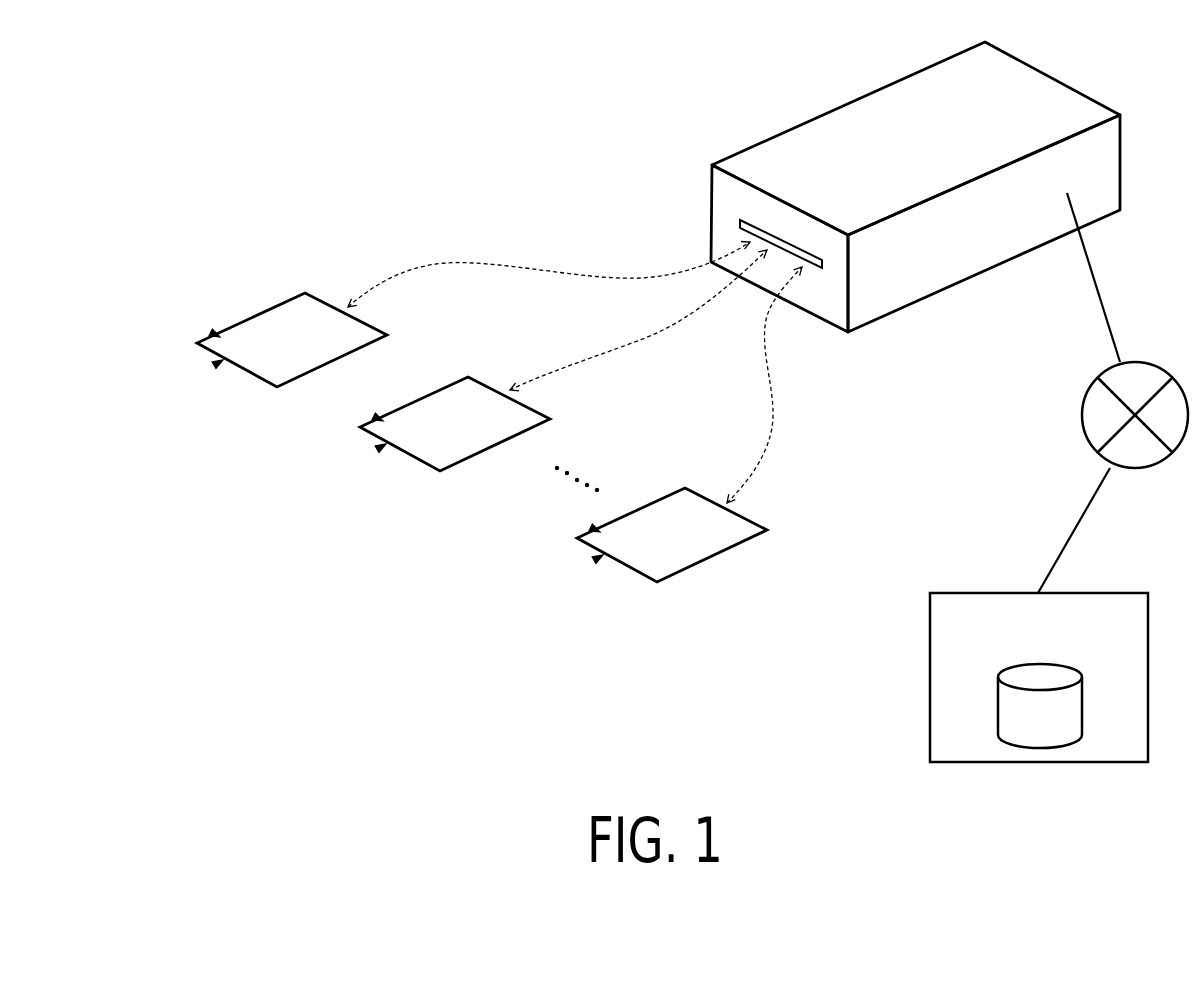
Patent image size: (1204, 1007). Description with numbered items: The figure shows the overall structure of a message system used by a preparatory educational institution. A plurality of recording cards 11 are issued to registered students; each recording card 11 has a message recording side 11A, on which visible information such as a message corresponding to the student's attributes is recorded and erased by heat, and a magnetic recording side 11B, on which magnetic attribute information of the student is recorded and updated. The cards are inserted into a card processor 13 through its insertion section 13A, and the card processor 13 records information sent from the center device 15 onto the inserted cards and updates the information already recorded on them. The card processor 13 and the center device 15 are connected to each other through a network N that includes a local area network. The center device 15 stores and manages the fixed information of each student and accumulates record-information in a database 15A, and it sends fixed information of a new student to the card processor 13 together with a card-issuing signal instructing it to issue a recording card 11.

The recording card 11 is at (318, 313).
The message recording side 11A is at (214, 331).
The magnetic recording side 11B is at (216, 366).
The card processor 13 is at (862, 123).
The insertion section 13A is at (750, 220).
The network N is at (1162, 362).
The center device 15 is at (1108, 592).
The database 15A is at (1083, 697).